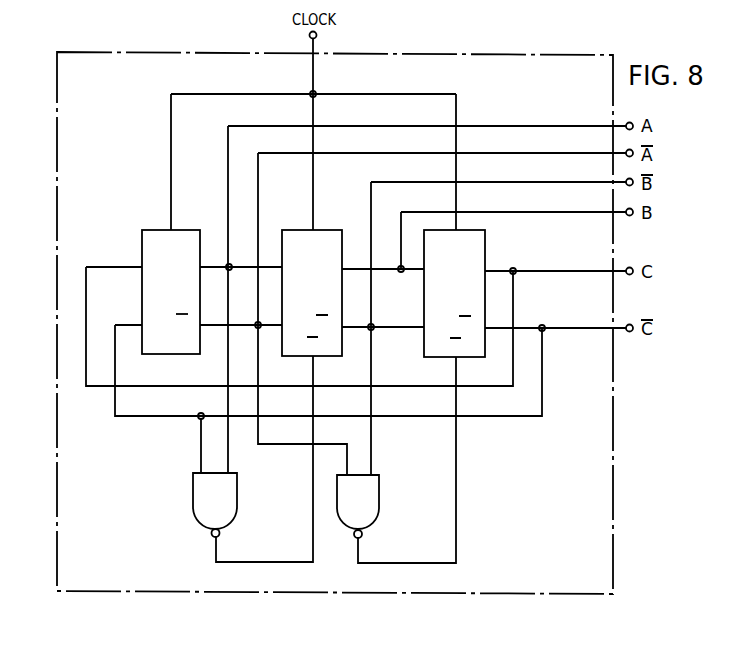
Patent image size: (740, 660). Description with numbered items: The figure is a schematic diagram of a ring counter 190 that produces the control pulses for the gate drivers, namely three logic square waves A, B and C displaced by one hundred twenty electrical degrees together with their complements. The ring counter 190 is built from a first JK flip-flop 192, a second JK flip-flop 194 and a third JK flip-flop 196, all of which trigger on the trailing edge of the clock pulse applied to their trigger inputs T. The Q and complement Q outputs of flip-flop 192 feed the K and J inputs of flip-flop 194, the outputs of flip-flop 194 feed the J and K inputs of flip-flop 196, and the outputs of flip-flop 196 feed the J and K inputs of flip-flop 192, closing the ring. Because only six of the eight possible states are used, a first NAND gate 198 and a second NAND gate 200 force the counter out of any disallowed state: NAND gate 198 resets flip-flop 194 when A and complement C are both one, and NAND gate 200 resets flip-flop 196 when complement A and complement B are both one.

The ring counter 190 is at (161, 592).
The first JK flip-flop 192 is at (150, 230).
The second JK flip-flop 194 is at (295, 230).
The third JK flip-flop 196 is at (486, 243).
The first NAND gate 198 is at (237, 502).
The second NAND gate 200 is at (380, 498).